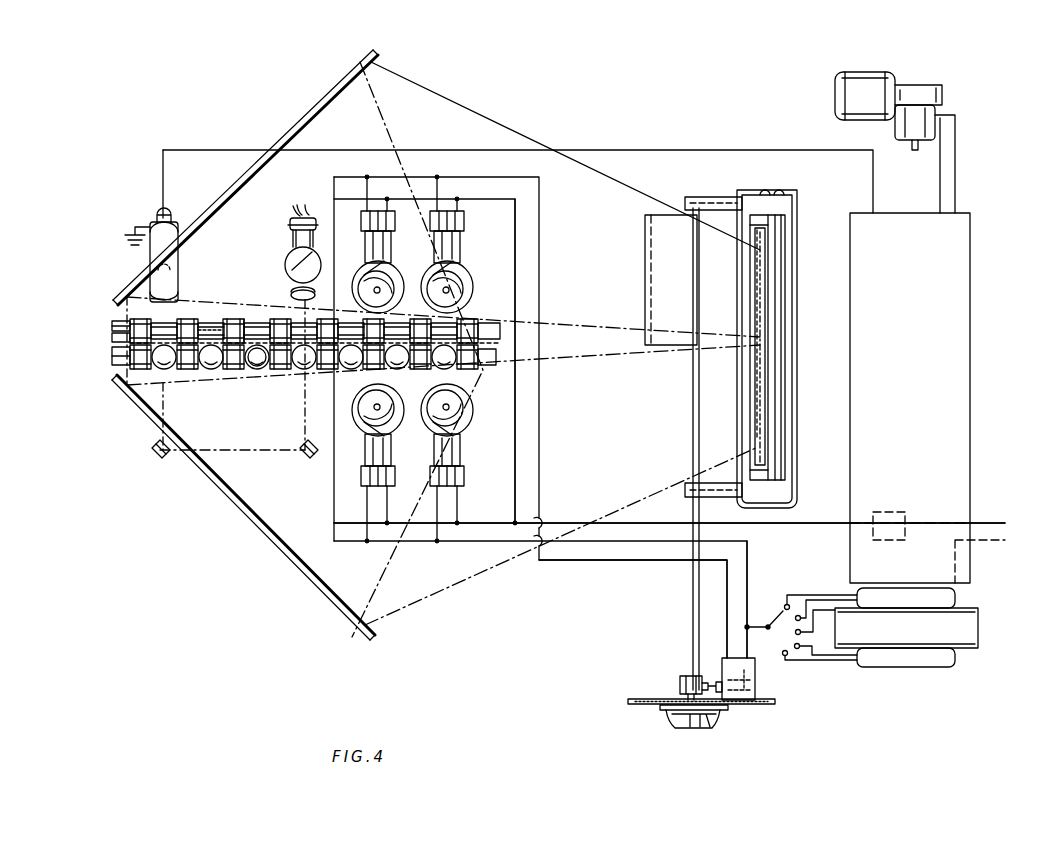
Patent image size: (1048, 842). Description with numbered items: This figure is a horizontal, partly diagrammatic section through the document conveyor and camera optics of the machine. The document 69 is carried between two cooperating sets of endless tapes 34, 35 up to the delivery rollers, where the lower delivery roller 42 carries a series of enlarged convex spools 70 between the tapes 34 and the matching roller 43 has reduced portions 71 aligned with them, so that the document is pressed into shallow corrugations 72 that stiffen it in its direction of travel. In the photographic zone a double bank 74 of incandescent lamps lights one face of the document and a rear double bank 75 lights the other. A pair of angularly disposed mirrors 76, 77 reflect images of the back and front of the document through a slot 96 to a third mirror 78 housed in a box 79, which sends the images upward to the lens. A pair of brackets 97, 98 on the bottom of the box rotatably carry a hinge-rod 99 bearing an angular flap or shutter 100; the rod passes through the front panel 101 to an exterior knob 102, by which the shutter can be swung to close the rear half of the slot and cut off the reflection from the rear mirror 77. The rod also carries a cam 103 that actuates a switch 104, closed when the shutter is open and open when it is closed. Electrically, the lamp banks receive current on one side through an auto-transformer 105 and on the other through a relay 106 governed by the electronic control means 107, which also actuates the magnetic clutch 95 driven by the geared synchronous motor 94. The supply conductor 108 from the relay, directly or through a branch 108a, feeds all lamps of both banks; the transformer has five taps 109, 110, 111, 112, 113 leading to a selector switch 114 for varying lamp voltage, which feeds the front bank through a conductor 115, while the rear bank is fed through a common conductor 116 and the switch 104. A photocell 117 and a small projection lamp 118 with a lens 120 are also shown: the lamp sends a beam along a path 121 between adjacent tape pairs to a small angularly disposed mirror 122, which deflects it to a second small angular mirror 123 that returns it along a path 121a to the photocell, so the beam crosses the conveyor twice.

The endless tapes 34 is at (232, 368).
The endless tapes 35 is at (238, 322).
The front delivery roller 42 is at (112, 356).
The rear delivery roller 43 is at (112, 326).
The document 69 is at (112, 338).
The enlarged convex spools 70 is at (262, 368).
The reduced portions 71 is at (206, 322).
The shallow corrugations 72 is at (258, 322).
The double bank of incandescent lamps 74 is at (360, 428).
The rear double bank of lamps 75 is at (392, 268).
The mirror 76 is at (290, 560).
The rear mirror 77 is at (236, 190).
The third mirror 78 is at (770, 425).
The box 79 is at (797, 462).
The geared synchronous motor 94 is at (855, 75).
The magnetic clutch 95 is at (895, 128).
The slot 96 is at (742, 432).
The bracket 97 is at (714, 496).
The bracket 98 is at (725, 200).
The hinge-rod 99 is at (699, 400).
The angular flap or shutter 100 is at (655, 300).
The front panel 101 is at (642, 699).
The exterior knob 102 is at (706, 728).
The cam 103 is at (682, 678).
The switch 104 is at (722, 680).
The auto-transformer 105 is at (860, 596).
The relay 106 is at (895, 540).
The electronic control means 107 is at (972, 300).
The supply conductor 108 is at (682, 524).
The branch 108a is at (513, 426).
The tap 109 is at (788, 600).
The tap 110 is at (808, 610).
The tap 111 is at (833, 618).
The tap 112 is at (824, 655).
The tap 113 is at (800, 661).
The selector switch 114 is at (770, 624).
The conductor 115 is at (747, 565).
The common conductor 116 is at (640, 566).
The photocell 117 is at (180, 262).
The small projection lamp 118 is at (312, 257).
The lens 120 is at (316, 294).
The path 121 is at (306, 412).
The path 121a is at (165, 423).
The small angularly disposed mirror 122 is at (309, 460).
The second small angular mirror 123 is at (160, 462).